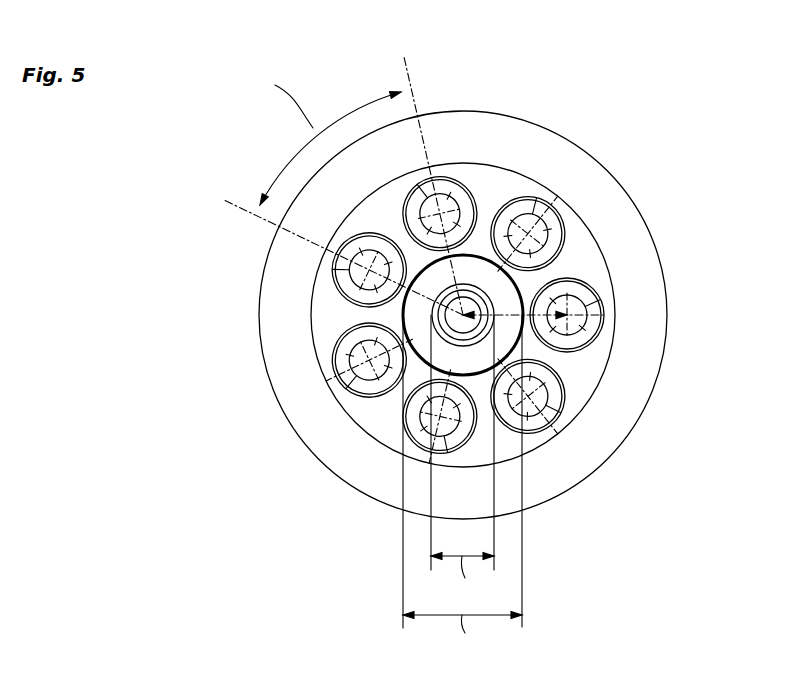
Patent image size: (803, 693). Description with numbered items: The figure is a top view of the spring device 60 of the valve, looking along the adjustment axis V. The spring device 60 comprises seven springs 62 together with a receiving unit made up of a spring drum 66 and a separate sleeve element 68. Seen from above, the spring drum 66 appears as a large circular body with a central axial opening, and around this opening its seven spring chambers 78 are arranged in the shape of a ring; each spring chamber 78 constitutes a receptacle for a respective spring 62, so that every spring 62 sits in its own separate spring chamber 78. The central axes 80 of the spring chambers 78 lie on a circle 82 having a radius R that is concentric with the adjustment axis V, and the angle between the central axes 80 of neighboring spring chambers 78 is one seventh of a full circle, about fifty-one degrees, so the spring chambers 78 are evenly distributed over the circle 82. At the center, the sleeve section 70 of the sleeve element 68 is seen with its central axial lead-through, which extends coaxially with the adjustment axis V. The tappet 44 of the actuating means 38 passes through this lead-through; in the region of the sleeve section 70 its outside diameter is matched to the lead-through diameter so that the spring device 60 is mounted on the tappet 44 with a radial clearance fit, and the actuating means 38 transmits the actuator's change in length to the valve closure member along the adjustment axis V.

The actuating means 38 is at (540, 203).
The tappet 44 is at (470, 310).
The spring device 60 is at (260, 403).
The spring 62 is at (586, 318).
The spring drum 66 is at (600, 248).
The sleeve element 68 is at (530, 315).
The sleeve section 70 is at (587, 260).
The spring chamber 78 is at (597, 338).
The central axis 80 is at (475, 262).
The circle 82 is at (402, 317).
The adjustment axis V is at (466, 312).
The radius R is at (556, 354).